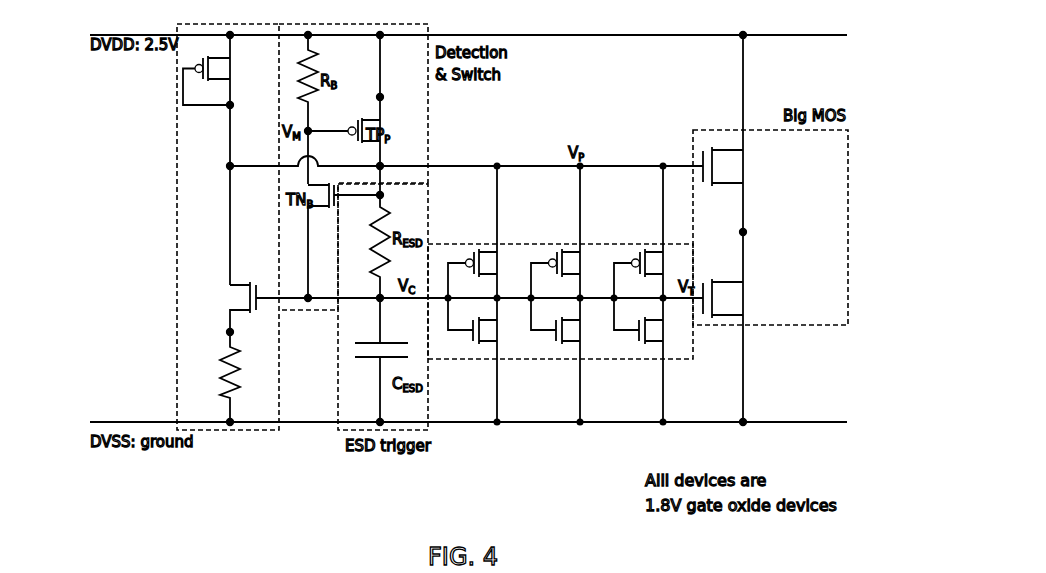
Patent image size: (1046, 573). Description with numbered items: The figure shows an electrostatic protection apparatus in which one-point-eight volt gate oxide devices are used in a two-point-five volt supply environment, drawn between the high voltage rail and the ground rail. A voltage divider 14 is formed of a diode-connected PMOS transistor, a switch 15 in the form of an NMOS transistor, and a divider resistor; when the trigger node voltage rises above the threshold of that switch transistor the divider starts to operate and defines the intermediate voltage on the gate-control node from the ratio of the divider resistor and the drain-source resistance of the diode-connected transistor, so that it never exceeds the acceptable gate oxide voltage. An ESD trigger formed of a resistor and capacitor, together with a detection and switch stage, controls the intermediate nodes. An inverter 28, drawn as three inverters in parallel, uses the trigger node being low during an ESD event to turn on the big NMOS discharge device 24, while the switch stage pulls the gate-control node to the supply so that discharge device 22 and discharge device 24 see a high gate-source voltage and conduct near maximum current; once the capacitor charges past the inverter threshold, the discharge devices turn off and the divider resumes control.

The voltage divider 14 is at (140, 205).
The switch 15 is at (230, 252).
The discharge device 22 is at (747, 172).
The discharge device 24 is at (747, 304).
The inverter 28 is at (693, 438).